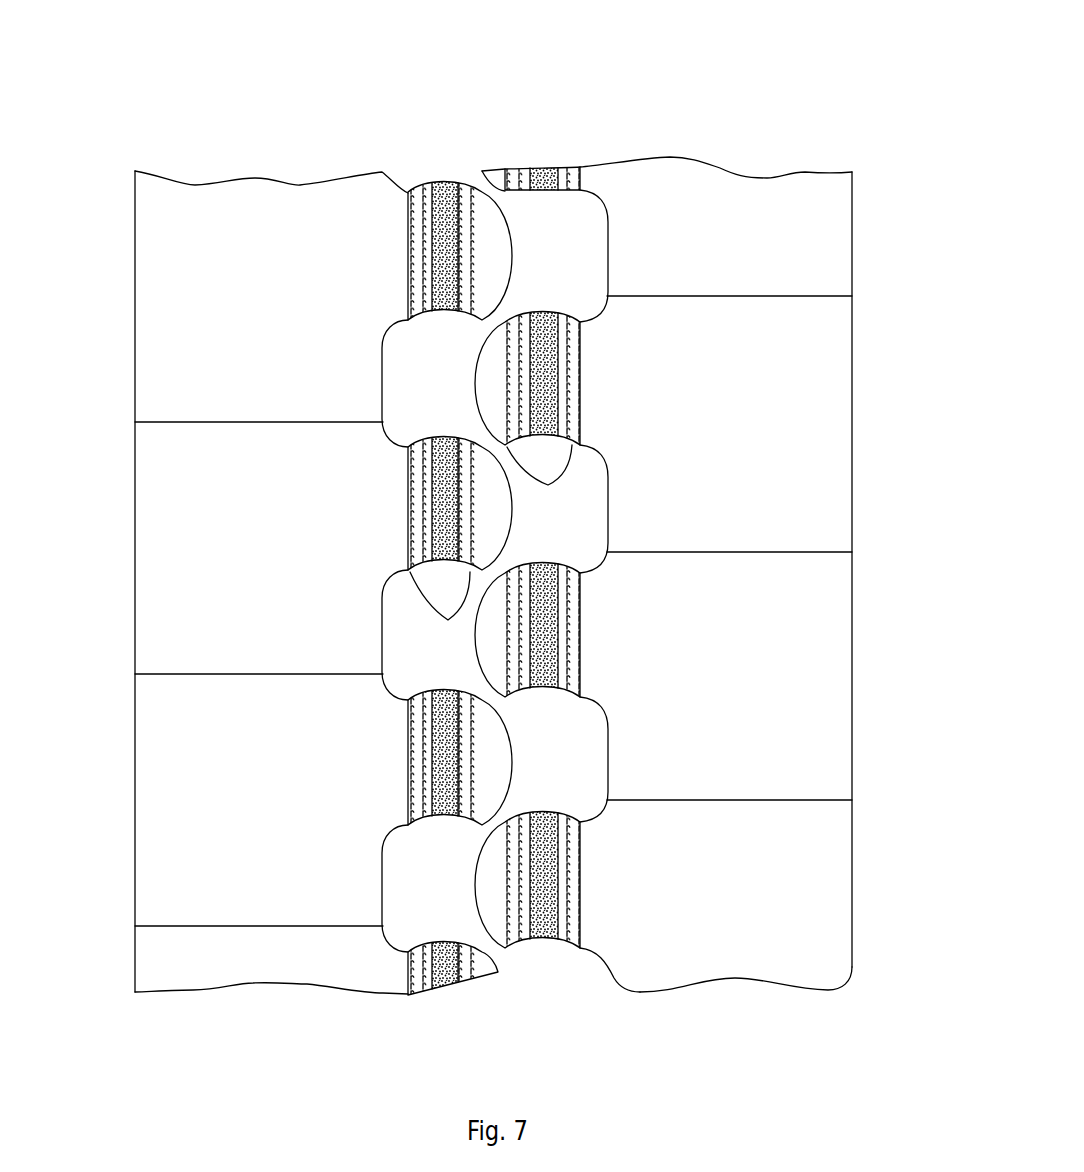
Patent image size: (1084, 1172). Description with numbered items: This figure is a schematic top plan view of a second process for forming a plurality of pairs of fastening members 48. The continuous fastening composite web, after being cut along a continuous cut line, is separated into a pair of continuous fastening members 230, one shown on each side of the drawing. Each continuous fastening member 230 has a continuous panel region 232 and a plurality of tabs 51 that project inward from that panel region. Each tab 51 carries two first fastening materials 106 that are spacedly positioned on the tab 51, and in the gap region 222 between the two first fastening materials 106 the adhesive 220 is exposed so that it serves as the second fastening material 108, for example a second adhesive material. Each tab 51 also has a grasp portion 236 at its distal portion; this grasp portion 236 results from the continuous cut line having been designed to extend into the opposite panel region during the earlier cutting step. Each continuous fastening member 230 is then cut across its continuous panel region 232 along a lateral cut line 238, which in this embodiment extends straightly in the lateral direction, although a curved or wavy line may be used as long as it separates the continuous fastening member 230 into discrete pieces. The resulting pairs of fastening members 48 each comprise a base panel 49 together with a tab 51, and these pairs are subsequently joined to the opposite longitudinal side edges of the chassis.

The continuous fastening member 230 is at (255, 138).
The fastening member 48 is at (122, 563).
The base panel 49 is at (216, 492).
The lateral cut line 238 is at (216, 422).
The continuous panel region 232 is at (197, 973).
The grasp portion 236 is at (495, 372).
The tab 51 is at (449, 427).
The adhesive 220 is at (440, 541).
The second fastening material 108 is at (510, 581).
The gap region 222 is at (442, 487).
The first fastening material 106 is at (491, 549).